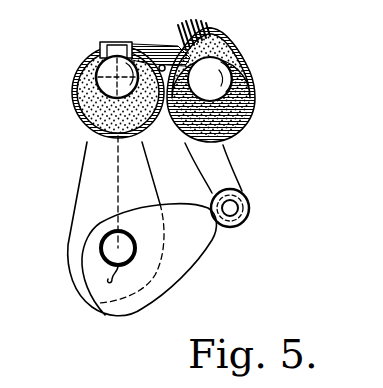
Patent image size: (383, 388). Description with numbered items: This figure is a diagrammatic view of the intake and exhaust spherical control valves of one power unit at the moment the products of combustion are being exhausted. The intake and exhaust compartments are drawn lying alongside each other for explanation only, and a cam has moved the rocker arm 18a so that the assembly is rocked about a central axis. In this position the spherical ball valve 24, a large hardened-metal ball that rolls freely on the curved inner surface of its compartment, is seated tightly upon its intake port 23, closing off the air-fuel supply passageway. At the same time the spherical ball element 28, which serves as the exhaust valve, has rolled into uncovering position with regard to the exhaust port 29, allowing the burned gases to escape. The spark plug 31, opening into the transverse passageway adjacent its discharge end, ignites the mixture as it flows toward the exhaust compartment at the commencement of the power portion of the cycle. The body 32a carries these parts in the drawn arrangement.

The port 23 is at (122, 58).
The spherical ball valve 24 is at (106, 68).
The spark plug 31 is at (163, 65).
The exhaust port 29 is at (208, 57).
The spherical ball element 28 is at (213, 68).
The rocker arm 18a is at (223, 178).
The plate body 32a is at (196, 275).